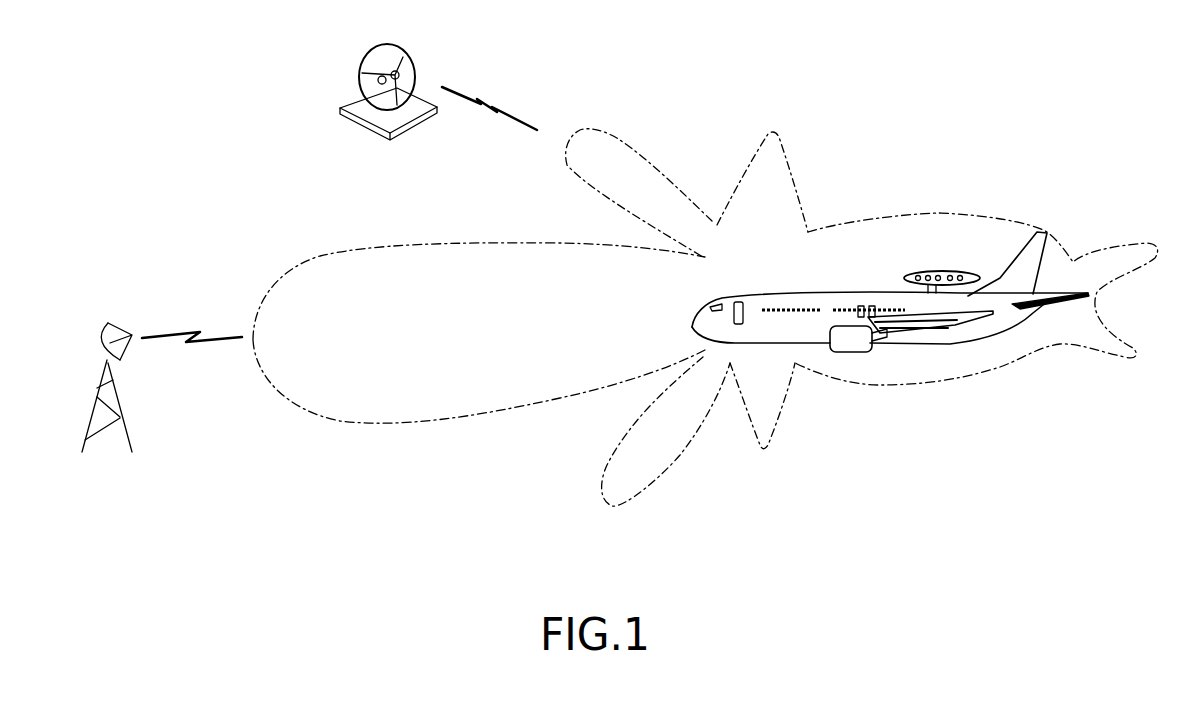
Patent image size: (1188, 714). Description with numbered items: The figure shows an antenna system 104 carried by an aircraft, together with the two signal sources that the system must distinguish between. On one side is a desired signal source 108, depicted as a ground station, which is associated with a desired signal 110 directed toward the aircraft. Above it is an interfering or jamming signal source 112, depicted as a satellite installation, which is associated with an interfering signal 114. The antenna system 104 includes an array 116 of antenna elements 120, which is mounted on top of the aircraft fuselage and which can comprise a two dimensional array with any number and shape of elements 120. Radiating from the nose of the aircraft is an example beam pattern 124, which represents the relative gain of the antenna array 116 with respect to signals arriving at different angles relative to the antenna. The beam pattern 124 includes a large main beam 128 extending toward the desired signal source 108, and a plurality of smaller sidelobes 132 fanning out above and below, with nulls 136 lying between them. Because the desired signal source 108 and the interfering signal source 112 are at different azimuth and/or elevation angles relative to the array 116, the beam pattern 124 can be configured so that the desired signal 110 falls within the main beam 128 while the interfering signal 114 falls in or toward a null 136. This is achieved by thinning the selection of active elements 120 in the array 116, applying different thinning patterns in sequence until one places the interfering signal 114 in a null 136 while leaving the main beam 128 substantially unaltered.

The antenna system 104 is at (974, 262).
The desired signal source 108 is at (123, 423).
The desired signal 110 is at (183, 335).
The interfering signal source 112 is at (361, 92).
The interfering signal 114 is at (473, 100).
The array 116 is at (947, 284).
The antenna elements 120 is at (932, 270).
The beam pattern 124 is at (815, 333).
The main beam 128 is at (315, 418).
The sidelobes 132 is at (597, 128).
The nulls 136 is at (720, 224).